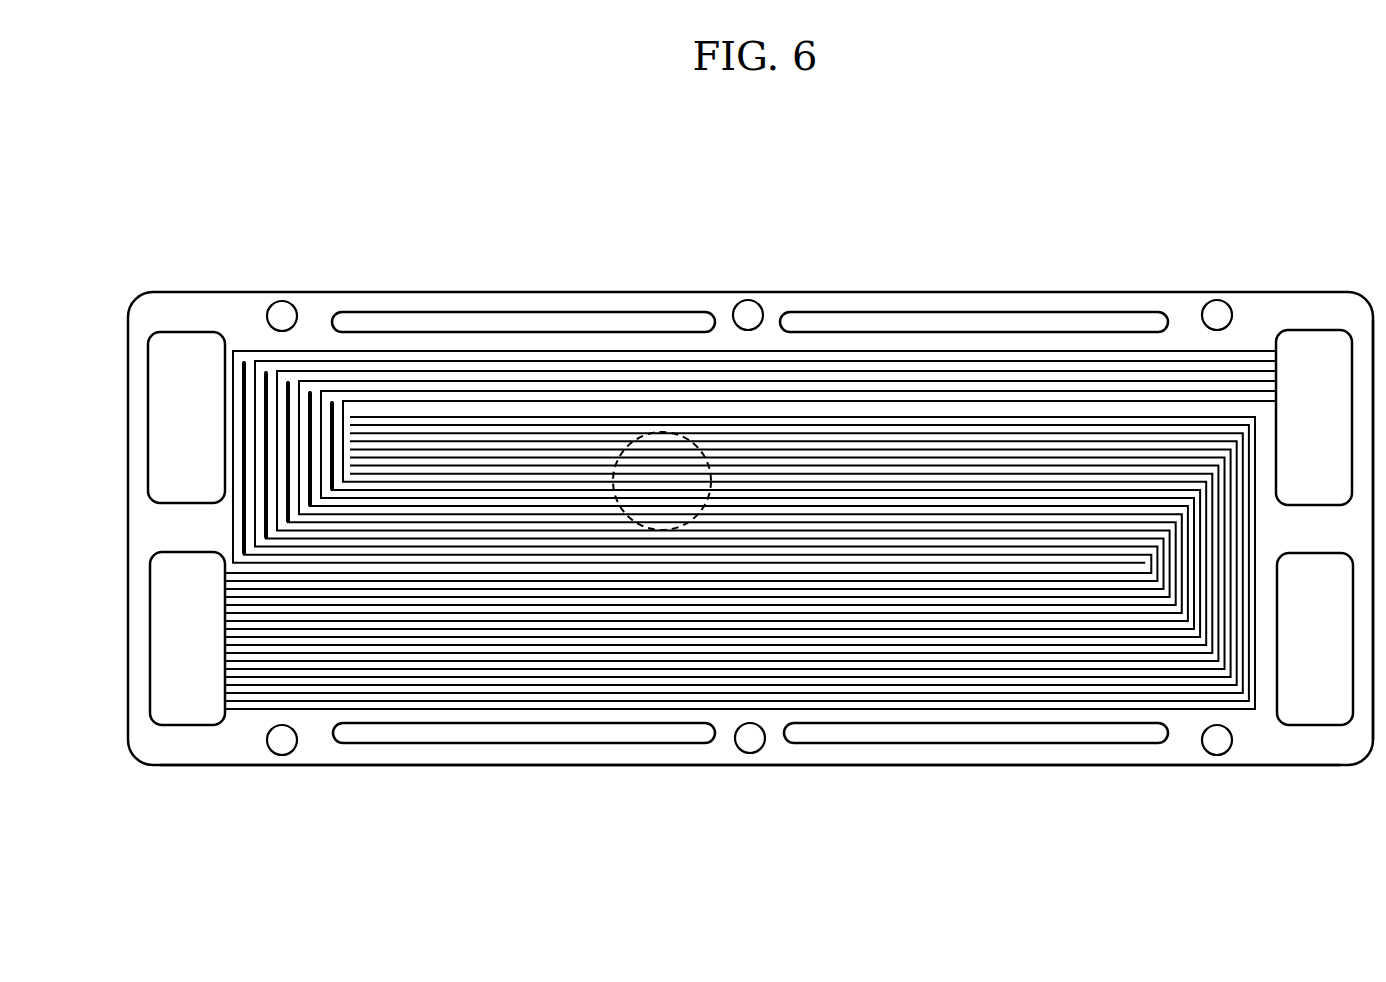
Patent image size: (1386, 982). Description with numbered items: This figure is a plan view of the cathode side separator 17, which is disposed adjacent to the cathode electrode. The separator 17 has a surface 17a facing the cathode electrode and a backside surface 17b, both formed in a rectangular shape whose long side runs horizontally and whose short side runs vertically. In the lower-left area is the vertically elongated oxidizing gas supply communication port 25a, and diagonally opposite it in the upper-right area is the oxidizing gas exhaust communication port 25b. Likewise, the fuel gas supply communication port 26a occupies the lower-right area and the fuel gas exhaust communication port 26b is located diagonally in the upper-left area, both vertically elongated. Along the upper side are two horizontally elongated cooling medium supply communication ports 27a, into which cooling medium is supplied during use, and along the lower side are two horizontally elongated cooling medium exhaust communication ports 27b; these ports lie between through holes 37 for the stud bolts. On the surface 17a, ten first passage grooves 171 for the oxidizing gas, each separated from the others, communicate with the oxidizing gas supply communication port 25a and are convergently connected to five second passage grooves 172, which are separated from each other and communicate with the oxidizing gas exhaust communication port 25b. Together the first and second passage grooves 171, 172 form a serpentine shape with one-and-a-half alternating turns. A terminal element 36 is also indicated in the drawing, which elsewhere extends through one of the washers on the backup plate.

The separator 17 is at (765, 233).
The surface 17a is at (235, 752).
The backside surface 17b is at (1265, 750).
The oxidizing gas supply communication port 25a is at (183, 715).
The oxidizing gas exhaust communication port 25b is at (1310, 360).
The fuel gas supply communication port 26a is at (1313, 702).
The fuel gas exhaust communication port 26b is at (182, 352).
The cooling medium supply communication ports 27a is at (522, 323).
The cooling medium exhaust communication ports 27b is at (633, 733).
The terminal element 36 is at (640, 433).
The through holes 37 is at (743, 742).
The first passage grooves 171 is at (324, 692).
The second passage grooves 172 is at (400, 367).